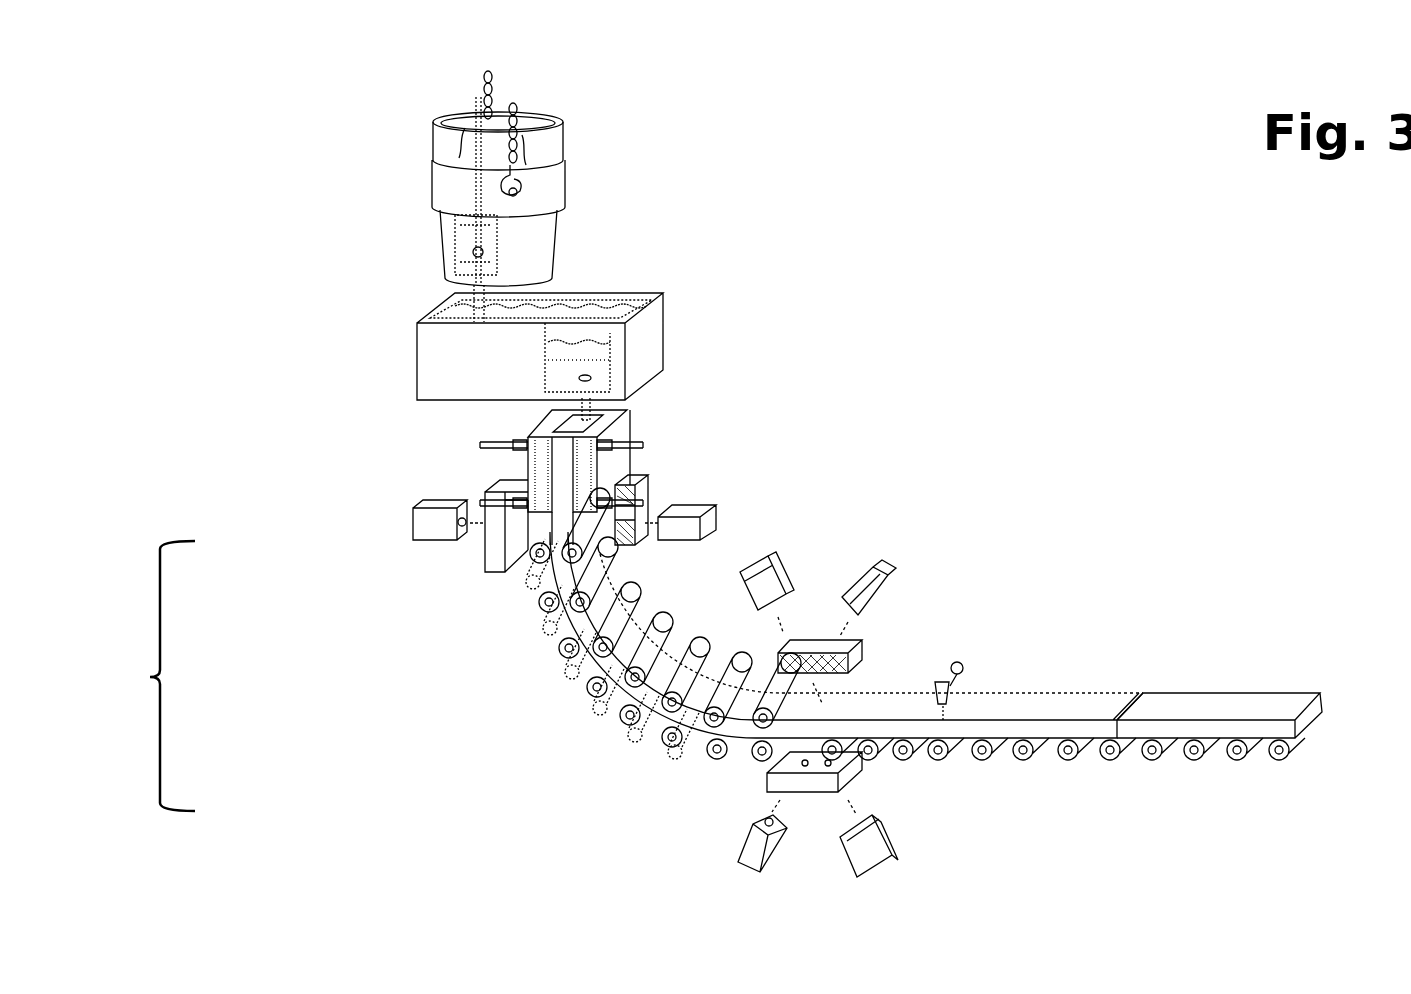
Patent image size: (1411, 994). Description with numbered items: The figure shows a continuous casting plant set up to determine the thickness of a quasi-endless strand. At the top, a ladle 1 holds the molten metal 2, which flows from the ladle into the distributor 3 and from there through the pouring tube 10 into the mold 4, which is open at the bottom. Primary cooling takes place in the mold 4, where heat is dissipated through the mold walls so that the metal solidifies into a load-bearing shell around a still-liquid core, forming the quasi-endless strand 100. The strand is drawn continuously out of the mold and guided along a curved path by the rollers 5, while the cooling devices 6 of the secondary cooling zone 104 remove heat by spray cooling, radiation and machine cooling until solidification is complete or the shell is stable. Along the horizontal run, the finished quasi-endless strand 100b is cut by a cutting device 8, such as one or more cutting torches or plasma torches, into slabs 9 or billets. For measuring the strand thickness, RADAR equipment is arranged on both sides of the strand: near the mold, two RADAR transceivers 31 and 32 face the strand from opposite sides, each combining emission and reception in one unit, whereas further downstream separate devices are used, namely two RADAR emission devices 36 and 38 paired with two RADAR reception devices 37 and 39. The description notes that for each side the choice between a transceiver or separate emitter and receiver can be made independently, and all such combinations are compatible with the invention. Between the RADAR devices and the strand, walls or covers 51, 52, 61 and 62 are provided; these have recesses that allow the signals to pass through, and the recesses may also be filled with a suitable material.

The ladle 1 is at (520, 243).
The molten metal 2 is at (565, 332).
The distributor 3 is at (643, 366).
The pouring tube 10 is at (588, 405).
The mold 4 is at (608, 472).
The quasi-endless strand 100 is at (560, 487).
The finished quasi-endless strand 100b is at (865, 707).
The slab 9 is at (1205, 703).
The rollers 5 is at (580, 600).
The cooling devices 6 is at (600, 625).
The RADAR transceiver 31 is at (432, 526).
The wall or cover 51 is at (495, 560).
The wall or cover 52 is at (618, 542).
The RADAR transceiver 32 is at (678, 529).
The RADAR emission device 36 is at (753, 594).
The RADAR reception device 37 is at (855, 600).
The cutting device 8 is at (963, 678).
The wall or cover 61 is at (808, 665).
The wall or cover 62 is at (805, 797).
The RADAR emission device 38 is at (760, 843).
The RADAR reception device 39 is at (858, 848).
The secondary cooling zone 104 is at (150, 677).